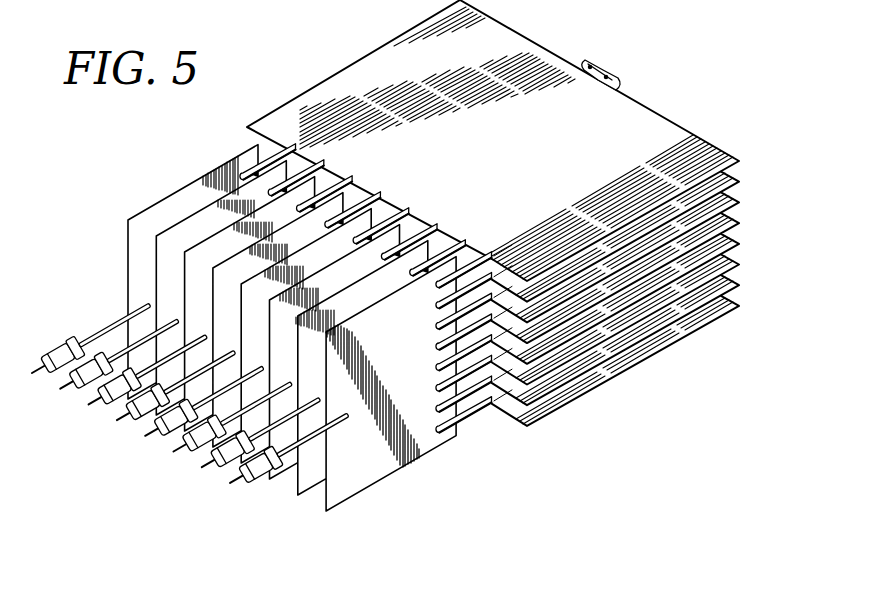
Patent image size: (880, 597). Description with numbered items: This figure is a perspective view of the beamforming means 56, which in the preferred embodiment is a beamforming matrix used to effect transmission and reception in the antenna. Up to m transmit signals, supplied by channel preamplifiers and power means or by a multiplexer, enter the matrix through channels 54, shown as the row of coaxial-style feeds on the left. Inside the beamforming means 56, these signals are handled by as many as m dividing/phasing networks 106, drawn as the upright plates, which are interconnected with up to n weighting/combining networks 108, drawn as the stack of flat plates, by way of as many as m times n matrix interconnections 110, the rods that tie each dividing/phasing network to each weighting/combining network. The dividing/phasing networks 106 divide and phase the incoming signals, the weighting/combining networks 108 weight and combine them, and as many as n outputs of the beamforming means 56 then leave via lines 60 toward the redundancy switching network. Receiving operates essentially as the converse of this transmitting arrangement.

The channels 54 is at (70, 388).
The beamforming means 56 is at (411, 271).
The lines 60 is at (597, 58).
The dividing/phasing networks 106 is at (312, 489).
The weighting/combining networks 108 is at (340, 75).
The matrix interconnections 110 is at (472, 426).